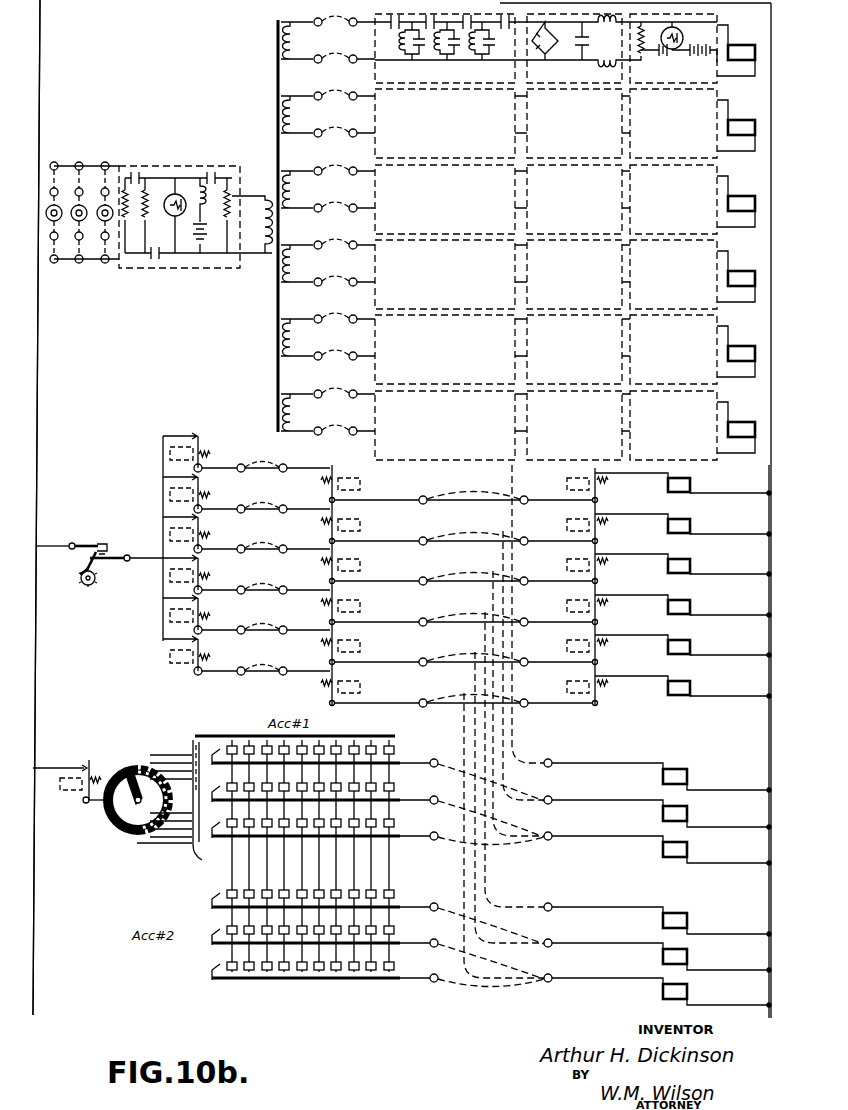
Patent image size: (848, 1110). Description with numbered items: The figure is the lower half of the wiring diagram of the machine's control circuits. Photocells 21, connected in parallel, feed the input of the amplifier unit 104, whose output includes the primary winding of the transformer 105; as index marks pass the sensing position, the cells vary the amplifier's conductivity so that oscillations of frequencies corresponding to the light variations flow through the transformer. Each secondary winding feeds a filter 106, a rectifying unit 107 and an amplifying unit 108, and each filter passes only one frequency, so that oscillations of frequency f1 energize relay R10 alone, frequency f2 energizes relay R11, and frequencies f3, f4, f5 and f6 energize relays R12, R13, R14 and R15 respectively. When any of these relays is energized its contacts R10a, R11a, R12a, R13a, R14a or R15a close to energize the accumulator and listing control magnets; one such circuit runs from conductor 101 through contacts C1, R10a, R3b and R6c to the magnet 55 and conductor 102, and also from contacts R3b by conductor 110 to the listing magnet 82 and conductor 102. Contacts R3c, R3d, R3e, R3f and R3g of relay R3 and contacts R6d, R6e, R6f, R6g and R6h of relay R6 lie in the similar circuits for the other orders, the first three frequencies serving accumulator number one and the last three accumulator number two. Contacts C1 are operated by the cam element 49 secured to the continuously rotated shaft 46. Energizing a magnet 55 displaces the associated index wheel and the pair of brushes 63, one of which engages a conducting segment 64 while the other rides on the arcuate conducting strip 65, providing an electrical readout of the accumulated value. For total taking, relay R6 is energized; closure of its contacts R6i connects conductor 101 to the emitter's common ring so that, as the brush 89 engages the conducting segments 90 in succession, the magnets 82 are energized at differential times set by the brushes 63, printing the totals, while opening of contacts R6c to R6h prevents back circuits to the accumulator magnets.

The photocells 21 is at (104, 205).
The conductor 101 is at (40, 366).
The conductor 102 is at (769, 473).
The amplifier unit 104 is at (160, 178).
The transformer 105 is at (270, 195).
The filter unit 106 is at (450, 74).
The rectifying unit 107 is at (578, 80).
The amplifying unit 108 is at (672, 80).
The conductor 110 is at (510, 736).
The frequency f1 is at (328, 39).
The frequency f2 is at (328, 113).
The frequency f3 is at (328, 188).
The frequency f4 is at (328, 262).
The frequency f5 is at (328, 336).
The frequency f6 is at (328, 411).
The relay R10 is at (740, 52).
The relay R11 is at (740, 127).
The relay R12 is at (740, 203).
The relay R13 is at (740, 278).
The relay R14 is at (740, 353).
The relay R15 is at (740, 429).
The relay contacts R10a is at (204, 444).
The relay contacts R11a is at (204, 486).
The relay contacts R12a is at (204, 526).
The relay contacts R13a is at (204, 567).
The relay contacts R14a is at (204, 607).
The relay contacts R15a is at (204, 648).
The relay R3 is at (358, 560).
The relay contacts R3b is at (321, 481).
The relay contacts R3c is at (321, 522).
The relay contacts R3d is at (321, 562).
The relay contacts R3e is at (321, 603).
The relay contacts R3f is at (321, 643).
The relay contacts R3g is at (321, 684).
The relay R6 is at (568, 560).
The relay contacts R6c is at (606, 482).
The relay contacts R6d is at (606, 523).
The relay contacts R6e is at (606, 563).
The relay contacts R6f is at (606, 604).
The relay contacts R6g is at (606, 644).
The relay contacts R6h is at (606, 685).
The relay contacts R6i is at (86, 764).
The accumulator control magnet 55 is at (688, 550).
The contacts C1 is at (95, 546).
The cam element 49 is at (80, 570).
The shaft 46 is at (82, 586).
The conducting segments 90 is at (128, 768).
The brush 89 is at (118, 818).
The brushes 63 is at (194, 850).
The conducting segments 64 is at (240, 972).
The arcuate conducting strip 65 is at (332, 980).
The listing control magnet 82 is at (688, 845).